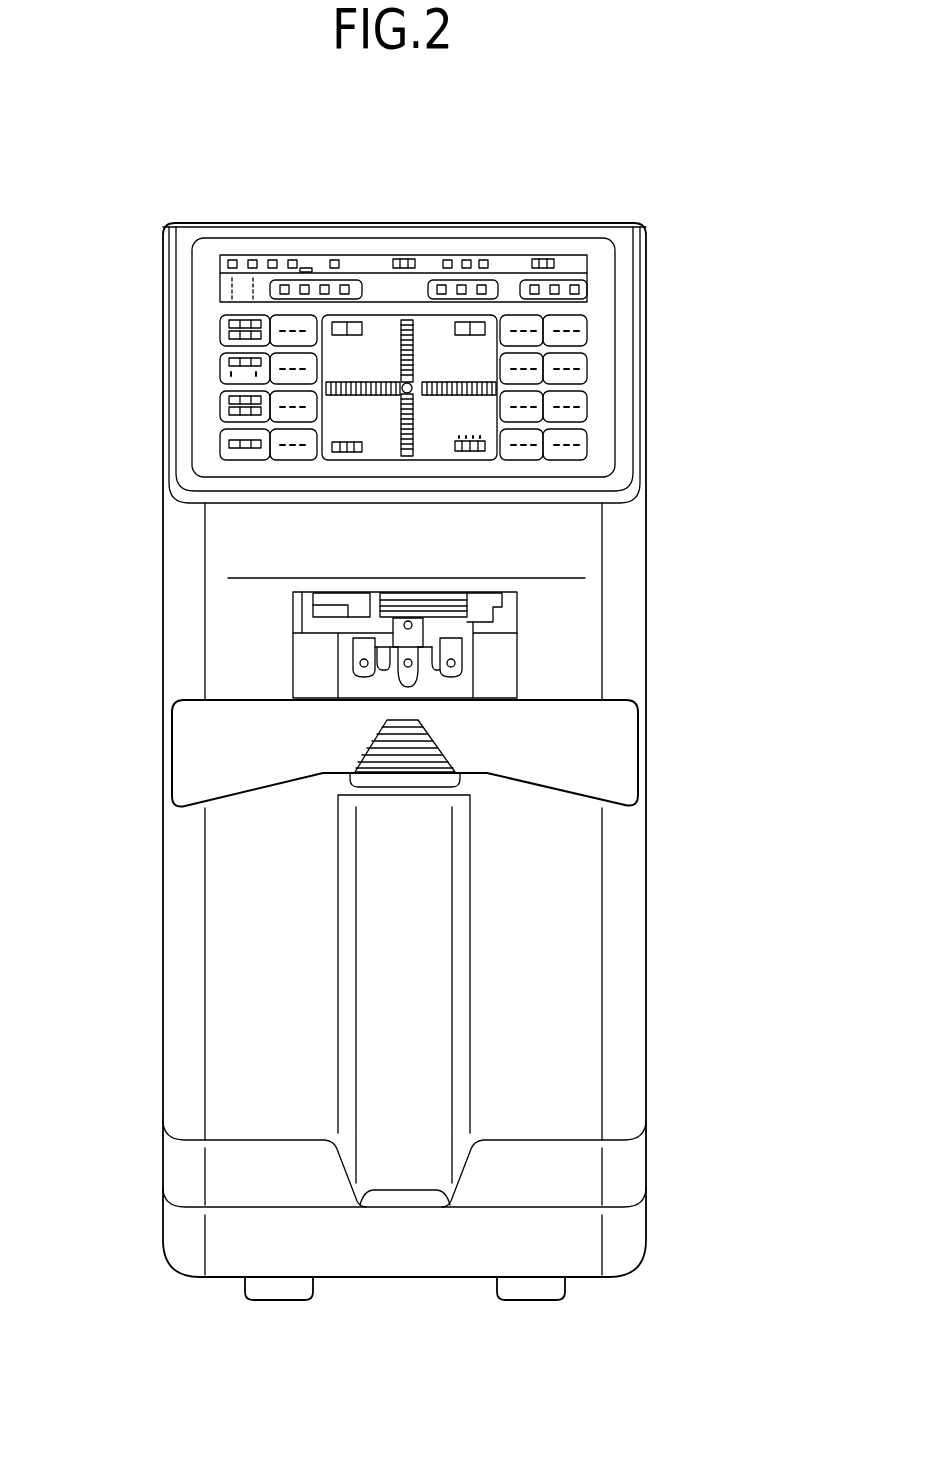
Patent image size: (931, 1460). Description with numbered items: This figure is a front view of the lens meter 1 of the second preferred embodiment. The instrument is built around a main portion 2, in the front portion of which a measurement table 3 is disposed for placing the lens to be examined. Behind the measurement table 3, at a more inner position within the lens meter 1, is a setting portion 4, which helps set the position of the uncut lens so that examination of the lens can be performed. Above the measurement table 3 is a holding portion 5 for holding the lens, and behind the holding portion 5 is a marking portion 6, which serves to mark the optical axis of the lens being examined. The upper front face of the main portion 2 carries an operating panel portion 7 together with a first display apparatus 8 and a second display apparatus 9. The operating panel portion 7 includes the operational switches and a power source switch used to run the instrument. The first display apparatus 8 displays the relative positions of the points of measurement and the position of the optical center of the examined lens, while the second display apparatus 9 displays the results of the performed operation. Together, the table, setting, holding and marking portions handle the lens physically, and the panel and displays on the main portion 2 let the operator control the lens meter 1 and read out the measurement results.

The lens meter 1 is at (134, 451).
The main portion 2 is at (162, 1058).
The measurement table 3 is at (372, 748).
The setting portion 4 is at (190, 733).
The holding portion 5 is at (432, 670).
The marking portion 6 is at (360, 648).
The operating panel portion 7 is at (580, 320).
The first display apparatus 8 is at (430, 336).
The second display apparatus 9 is at (300, 262).